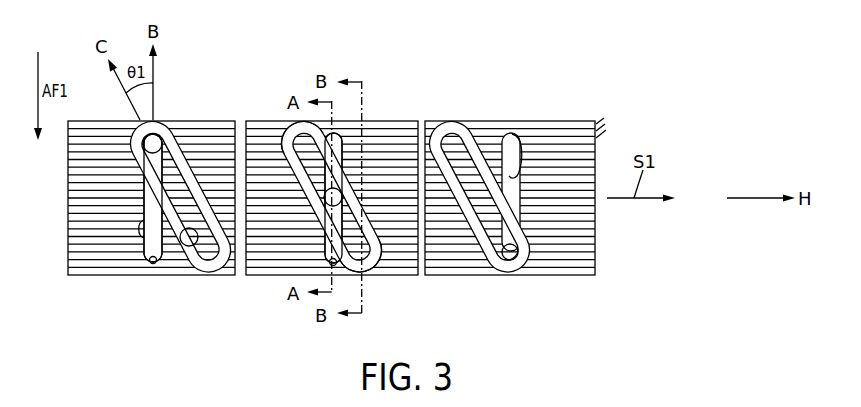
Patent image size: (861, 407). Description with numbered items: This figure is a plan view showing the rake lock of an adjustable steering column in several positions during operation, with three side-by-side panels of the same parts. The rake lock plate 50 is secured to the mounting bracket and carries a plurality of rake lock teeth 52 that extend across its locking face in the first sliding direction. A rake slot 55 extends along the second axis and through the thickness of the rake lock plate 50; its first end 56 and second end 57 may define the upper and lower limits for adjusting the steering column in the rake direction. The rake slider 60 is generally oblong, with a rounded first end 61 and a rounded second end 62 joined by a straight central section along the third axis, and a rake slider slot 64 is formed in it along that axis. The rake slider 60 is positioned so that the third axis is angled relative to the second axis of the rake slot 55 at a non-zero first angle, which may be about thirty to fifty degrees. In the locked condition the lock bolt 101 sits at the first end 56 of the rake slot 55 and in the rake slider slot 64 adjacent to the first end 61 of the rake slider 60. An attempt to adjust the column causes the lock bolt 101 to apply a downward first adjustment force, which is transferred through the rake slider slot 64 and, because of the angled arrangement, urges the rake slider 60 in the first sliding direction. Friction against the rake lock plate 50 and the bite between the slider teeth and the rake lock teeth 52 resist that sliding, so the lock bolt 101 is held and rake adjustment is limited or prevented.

The rake lock plate 50 is at (80, 287).
The rake lock teeth 52 is at (596, 140).
The rake slot 55 is at (145, 224).
The first end 56 is at (508, 140).
The second end 57 is at (153, 264).
The rake slider 60 is at (376, 284).
The first end 61 is at (288, 132).
The second end 62 is at (372, 268).
The rake slider slot 64 is at (184, 241).
The lock bolt 101 is at (510, 253).